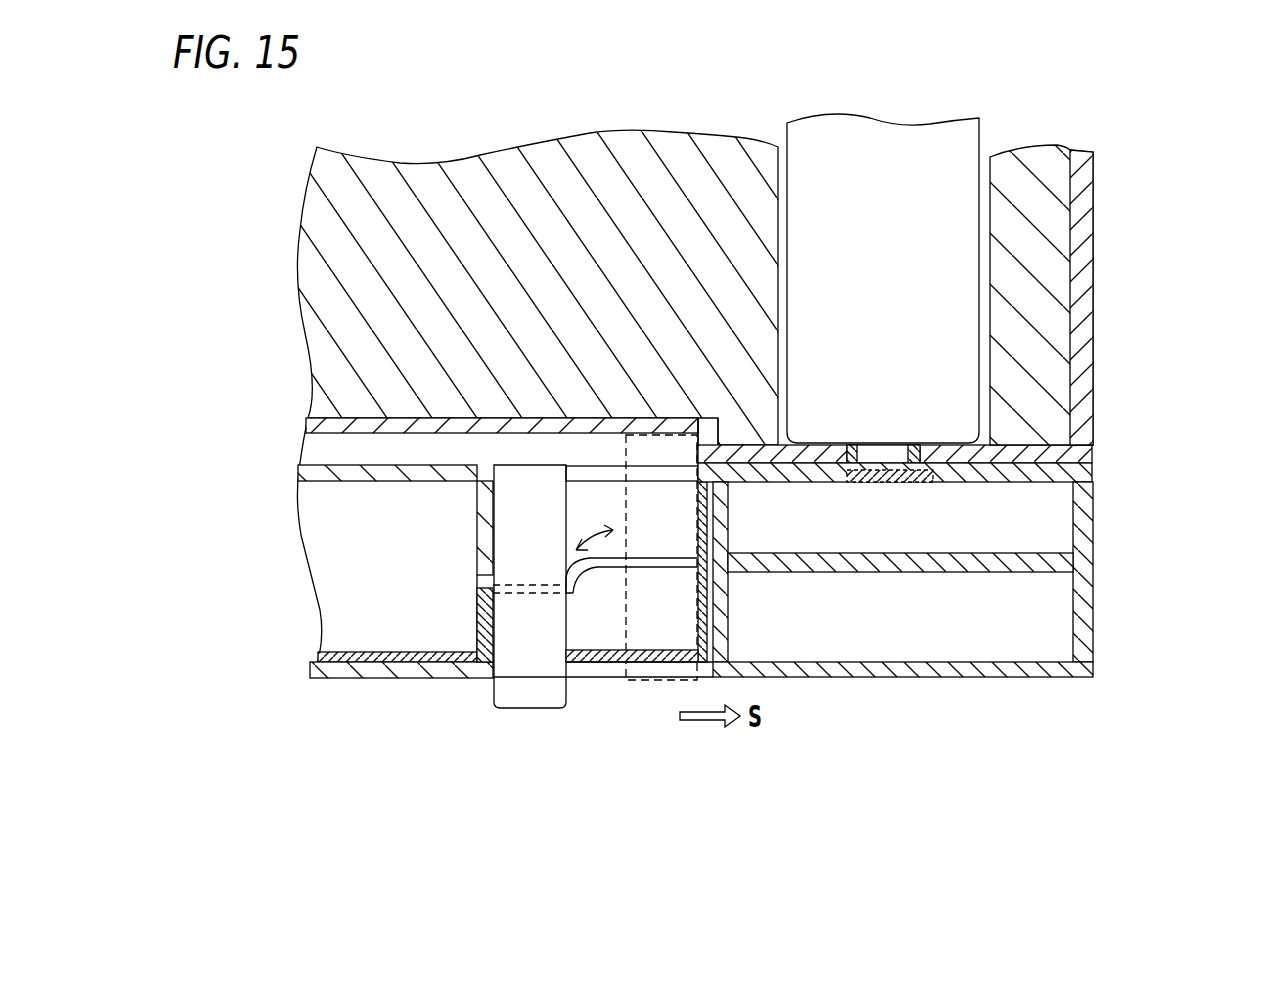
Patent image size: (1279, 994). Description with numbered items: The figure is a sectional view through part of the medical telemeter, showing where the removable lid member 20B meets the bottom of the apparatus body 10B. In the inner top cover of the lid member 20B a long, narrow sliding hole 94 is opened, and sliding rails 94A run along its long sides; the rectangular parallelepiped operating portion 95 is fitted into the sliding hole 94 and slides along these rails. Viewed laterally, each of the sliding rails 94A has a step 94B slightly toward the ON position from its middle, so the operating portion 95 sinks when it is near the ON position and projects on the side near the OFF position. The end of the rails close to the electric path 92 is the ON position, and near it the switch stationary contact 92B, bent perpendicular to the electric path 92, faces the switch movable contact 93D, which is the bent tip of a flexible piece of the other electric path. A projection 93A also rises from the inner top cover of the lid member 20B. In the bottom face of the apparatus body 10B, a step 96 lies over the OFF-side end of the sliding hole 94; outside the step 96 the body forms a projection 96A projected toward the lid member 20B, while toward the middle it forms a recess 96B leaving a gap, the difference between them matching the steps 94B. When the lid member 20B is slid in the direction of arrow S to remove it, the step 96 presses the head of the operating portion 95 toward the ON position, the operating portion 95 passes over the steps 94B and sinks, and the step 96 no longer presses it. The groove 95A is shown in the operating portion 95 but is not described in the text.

The apparatus body 10B is at (1093, 213).
The lid member 20B is at (902, 677).
The electric path 92 is at (367, 652).
The switch stationary contact 92B is at (477, 622).
The projection 93A is at (897, 482).
The switch movable contact 93D is at (488, 663).
The sliding hole 94 is at (603, 562).
The sliding rails 94A is at (613, 560).
The step 94B is at (567, 576).
The operating portion 95 is at (665, 460).
The groove of pin 95A is at (523, 585).
The step 96 is at (716, 435).
The projection 96A is at (790, 438).
The recess 96B is at (380, 418).